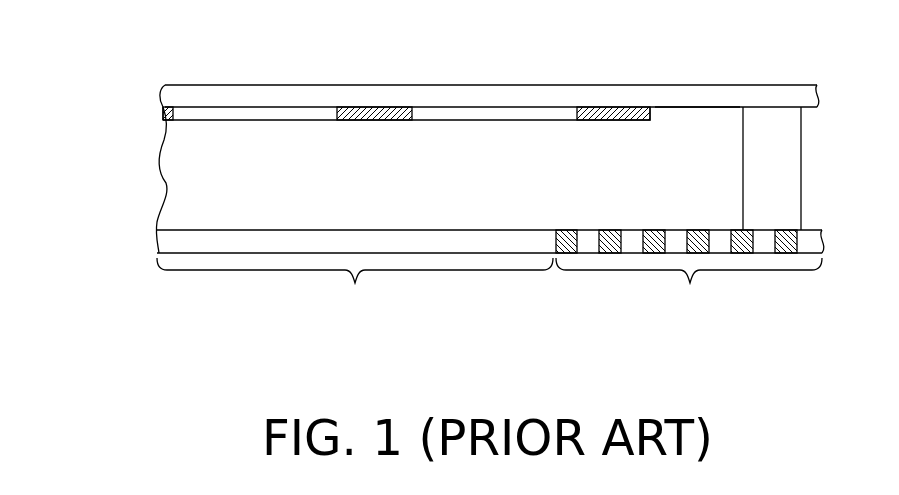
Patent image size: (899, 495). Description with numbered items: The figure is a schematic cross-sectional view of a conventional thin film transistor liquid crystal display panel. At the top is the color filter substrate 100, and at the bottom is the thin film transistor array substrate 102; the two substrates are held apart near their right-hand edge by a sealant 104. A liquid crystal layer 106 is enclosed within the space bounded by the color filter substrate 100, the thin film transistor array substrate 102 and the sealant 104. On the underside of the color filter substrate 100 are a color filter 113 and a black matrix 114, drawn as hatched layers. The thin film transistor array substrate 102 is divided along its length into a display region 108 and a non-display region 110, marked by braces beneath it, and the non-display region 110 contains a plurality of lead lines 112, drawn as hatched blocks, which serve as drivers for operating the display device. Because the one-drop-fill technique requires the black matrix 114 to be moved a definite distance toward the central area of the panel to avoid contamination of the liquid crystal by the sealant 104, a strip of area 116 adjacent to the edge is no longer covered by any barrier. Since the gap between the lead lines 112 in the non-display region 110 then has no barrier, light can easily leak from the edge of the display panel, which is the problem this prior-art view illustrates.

The color filter substrate 100 is at (807, 94).
The thin film transistor array substrate 102 is at (808, 240).
The sealant 104 is at (785, 171).
The liquid crystal layer 106 is at (178, 168).
The display region 108 is at (355, 289).
The non-display region 110 is at (689, 289).
The lead lines 112 is at (785, 246).
The color filter 113 is at (443, 107).
The black matrix 114 is at (598, 107).
The strip of area 116 is at (677, 107).